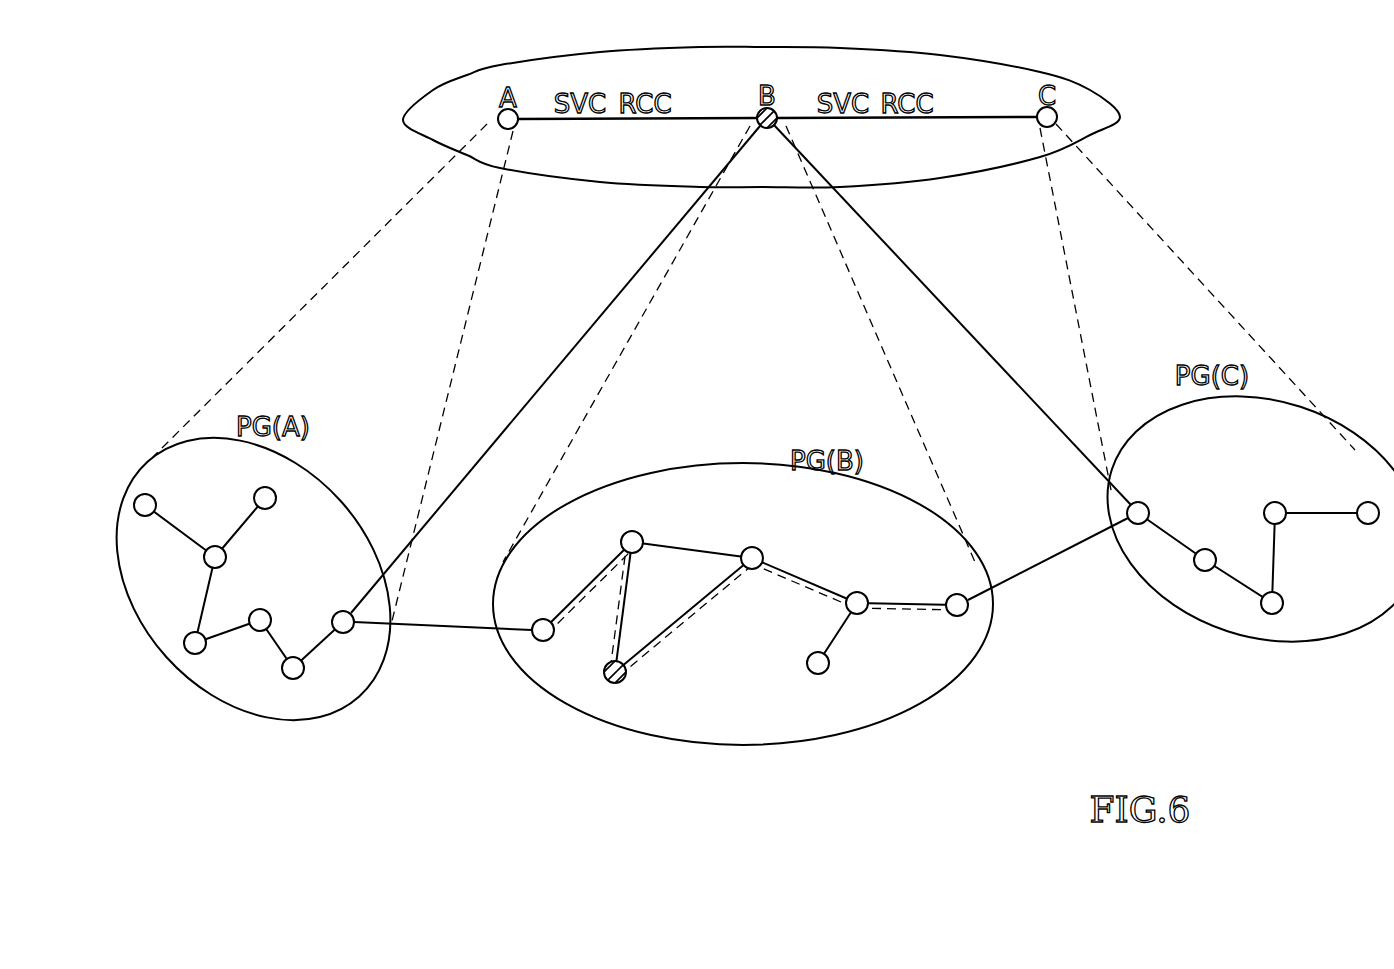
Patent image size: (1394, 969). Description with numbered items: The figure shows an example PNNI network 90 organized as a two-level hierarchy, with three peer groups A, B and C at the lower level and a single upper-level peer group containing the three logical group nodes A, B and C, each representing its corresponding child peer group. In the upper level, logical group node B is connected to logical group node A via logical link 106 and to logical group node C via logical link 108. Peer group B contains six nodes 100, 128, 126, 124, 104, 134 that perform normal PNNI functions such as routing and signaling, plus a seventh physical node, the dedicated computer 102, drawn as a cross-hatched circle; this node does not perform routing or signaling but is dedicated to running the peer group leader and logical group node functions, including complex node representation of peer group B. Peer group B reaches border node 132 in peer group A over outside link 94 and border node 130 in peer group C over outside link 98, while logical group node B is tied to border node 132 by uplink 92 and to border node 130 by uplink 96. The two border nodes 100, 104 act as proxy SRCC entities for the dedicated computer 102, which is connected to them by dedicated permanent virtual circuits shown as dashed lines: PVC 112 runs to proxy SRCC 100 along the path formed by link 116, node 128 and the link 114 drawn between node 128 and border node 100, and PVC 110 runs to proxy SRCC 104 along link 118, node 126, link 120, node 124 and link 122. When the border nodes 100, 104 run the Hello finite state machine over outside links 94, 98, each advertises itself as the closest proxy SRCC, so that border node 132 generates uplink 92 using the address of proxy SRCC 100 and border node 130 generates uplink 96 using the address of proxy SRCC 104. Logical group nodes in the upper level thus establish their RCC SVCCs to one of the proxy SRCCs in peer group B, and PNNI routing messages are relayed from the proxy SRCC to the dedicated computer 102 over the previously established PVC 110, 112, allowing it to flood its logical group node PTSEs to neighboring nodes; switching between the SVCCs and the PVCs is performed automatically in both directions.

The network 90 is at (402, 770).
The uplink 92 is at (490, 447).
The outside link 94 is at (432, 625).
The uplink 96 is at (877, 233).
The outside link 98 is at (1027, 562).
The border node 100 is at (543, 643).
The dedicated computer 102 is at (617, 684).
The border node 104 is at (957, 617).
The logical link 106 is at (693, 123).
The logical link 108 is at (862, 121).
The PVC 110 is at (710, 598).
The PVC 112 is at (576, 600).
The link between nodes 100 and 128 114 is at (578, 584).
The link 116 is at (632, 588).
The link 118 is at (656, 630).
The link 120 is at (787, 572).
The link 122 is at (890, 601).
The node 124 is at (852, 592).
The node 126 is at (748, 546).
The node 128 is at (628, 531).
The border node 130 is at (1141, 502).
The border node 132 is at (335, 613).
The node 134 is at (830, 663).